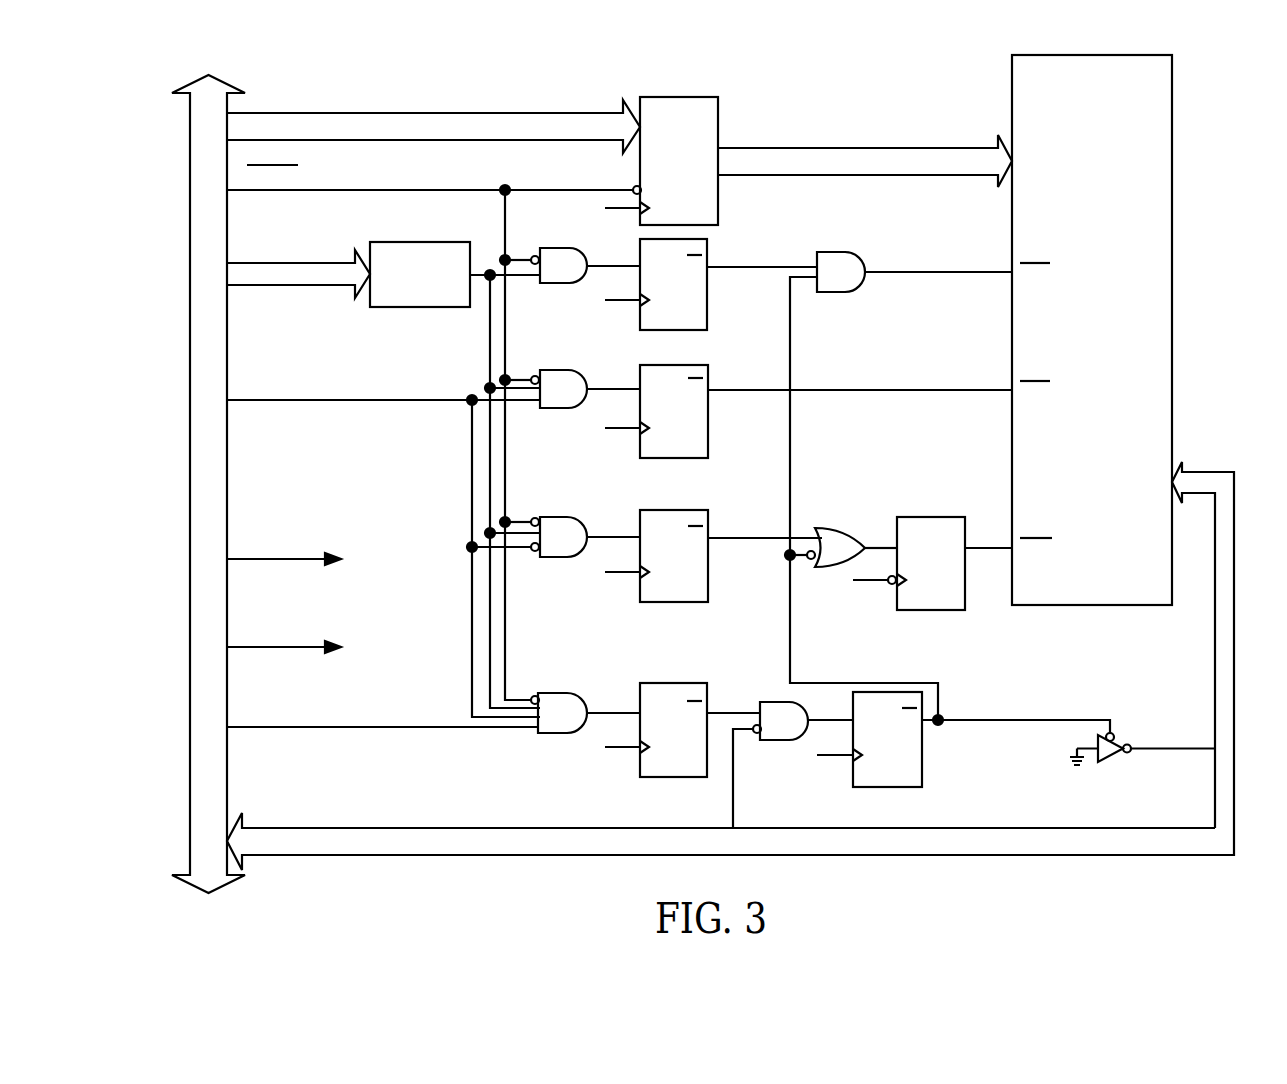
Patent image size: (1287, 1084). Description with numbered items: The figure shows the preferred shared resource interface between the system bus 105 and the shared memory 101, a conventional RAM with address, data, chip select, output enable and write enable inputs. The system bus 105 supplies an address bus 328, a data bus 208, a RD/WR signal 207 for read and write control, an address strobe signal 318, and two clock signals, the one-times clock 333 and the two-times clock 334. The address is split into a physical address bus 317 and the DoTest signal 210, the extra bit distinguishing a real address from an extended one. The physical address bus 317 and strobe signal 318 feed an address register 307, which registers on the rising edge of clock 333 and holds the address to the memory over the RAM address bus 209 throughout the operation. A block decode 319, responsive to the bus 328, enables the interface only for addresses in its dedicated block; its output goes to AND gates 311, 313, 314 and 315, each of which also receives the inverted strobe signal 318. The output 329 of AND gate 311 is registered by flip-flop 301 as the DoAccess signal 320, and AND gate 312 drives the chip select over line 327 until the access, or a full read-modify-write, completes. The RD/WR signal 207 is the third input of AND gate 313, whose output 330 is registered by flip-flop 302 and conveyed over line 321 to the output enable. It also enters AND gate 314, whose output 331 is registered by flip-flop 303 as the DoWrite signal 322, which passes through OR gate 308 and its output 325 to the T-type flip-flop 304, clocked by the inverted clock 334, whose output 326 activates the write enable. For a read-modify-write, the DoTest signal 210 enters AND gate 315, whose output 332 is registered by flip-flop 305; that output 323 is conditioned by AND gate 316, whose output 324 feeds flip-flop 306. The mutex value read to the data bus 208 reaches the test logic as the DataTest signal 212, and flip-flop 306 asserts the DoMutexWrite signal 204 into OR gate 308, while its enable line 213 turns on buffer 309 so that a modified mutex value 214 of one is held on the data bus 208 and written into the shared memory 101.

The shared memory 101 is at (1010, 90).
The system bus 105 is at (228, 480).
The DoMutexWrite signal 204 is at (838, 683).
The RD/WR signal 207 is at (386, 404).
The data bus 208 is at (498, 828).
The RAM address bus 209 is at (891, 148).
The DoTest signal 210 is at (405, 727).
The DataTest signal 212 is at (733, 815).
The tri-state enable line 213 is at (1040, 720).
The modified mutex value 214 is at (1178, 748).
The flip-flop 301 is at (673, 284).
The flip-flop 302 is at (674, 411).
The flip-flop 303 is at (674, 556).
The T-type flip-flop 304 is at (931, 563).
The flip-flop 305 is at (673, 730).
The flip-flop 306 is at (887, 739).
The address register 307 is at (679, 161).
The OR gate 308 is at (840, 547).
The buffer 309 is at (1110, 760).
The AND gate 311 is at (563, 265).
The AND gate 312 is at (841, 272).
The AND gate 313 is at (563, 389).
The AND gate 314 is at (563, 537).
The AND gate 315 is at (562, 713).
The AND gate 316 is at (784, 721).
The physical address bus 317 is at (430, 113).
The address strobe signal 318 is at (426, 190).
The block decode 319 is at (440, 309).
The DoAccess signal 320 is at (765, 267).
The flip-flop 302 output (OE) 321 is at (758, 390).
The DoWrite signal 322 is at (758, 537).
The flip-flop 305 output 323 is at (722, 713).
The gate 316 output 324 is at (830, 725).
The OR gate 308 output 325 is at (890, 540).
The write enable signal (WE) 326 is at (1002, 540).
The chip select signal (CS) 327 is at (930, 272).
The address bus 328 is at (296, 290).
The gate 311 output 329 is at (617, 270).
The gate 313 output 330 is at (628, 386).
The gate 314 output 331 is at (630, 535).
The gate 315 output 332 is at (612, 710).
The 1×Clk 333 is at (266, 562).
The 2×Clk 334 is at (266, 650).